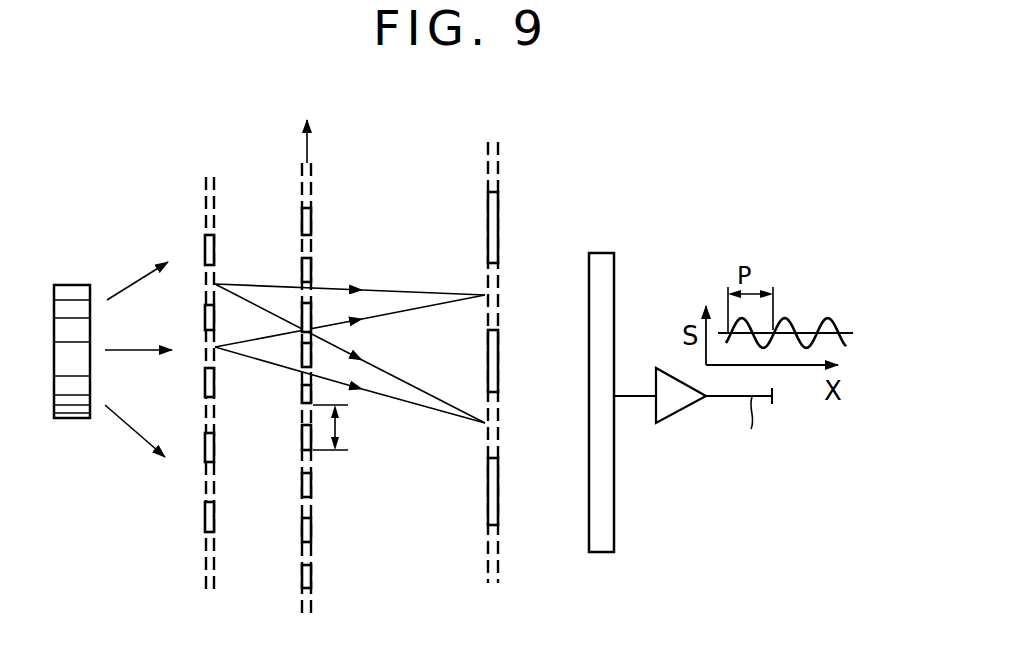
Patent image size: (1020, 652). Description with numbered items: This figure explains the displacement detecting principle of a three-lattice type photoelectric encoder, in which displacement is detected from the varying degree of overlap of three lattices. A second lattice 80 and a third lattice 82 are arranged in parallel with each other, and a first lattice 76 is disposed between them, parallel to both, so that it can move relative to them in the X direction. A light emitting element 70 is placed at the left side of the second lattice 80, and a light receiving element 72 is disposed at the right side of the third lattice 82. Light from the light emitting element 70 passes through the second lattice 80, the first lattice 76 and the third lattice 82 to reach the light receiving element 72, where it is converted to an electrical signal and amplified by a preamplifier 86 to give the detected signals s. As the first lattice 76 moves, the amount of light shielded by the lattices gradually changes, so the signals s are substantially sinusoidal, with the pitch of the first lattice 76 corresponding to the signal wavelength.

The light emitting element 70 is at (78, 419).
The second lattice 80 is at (205, 246).
The first lattice 76 is at (302, 214).
The third lattice 82 is at (488, 224).
The light receiving element 72 is at (600, 553).
The preamplifier 86 is at (680, 413).